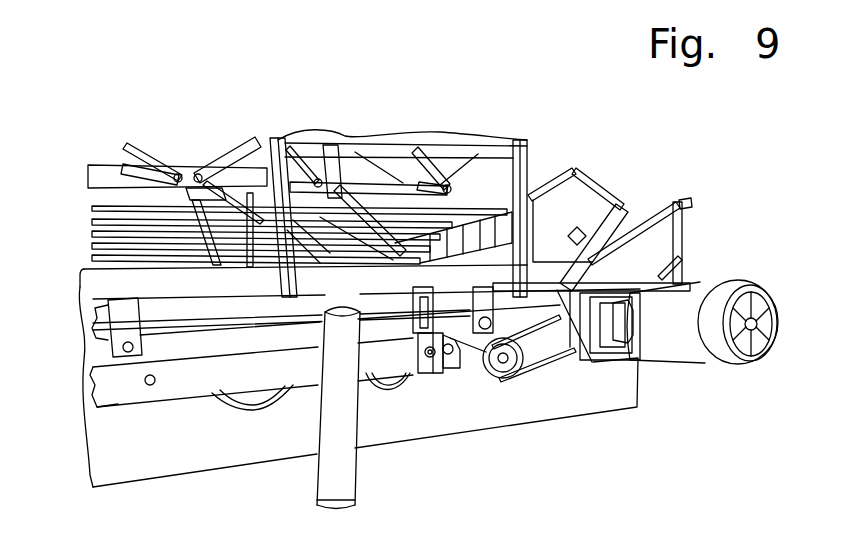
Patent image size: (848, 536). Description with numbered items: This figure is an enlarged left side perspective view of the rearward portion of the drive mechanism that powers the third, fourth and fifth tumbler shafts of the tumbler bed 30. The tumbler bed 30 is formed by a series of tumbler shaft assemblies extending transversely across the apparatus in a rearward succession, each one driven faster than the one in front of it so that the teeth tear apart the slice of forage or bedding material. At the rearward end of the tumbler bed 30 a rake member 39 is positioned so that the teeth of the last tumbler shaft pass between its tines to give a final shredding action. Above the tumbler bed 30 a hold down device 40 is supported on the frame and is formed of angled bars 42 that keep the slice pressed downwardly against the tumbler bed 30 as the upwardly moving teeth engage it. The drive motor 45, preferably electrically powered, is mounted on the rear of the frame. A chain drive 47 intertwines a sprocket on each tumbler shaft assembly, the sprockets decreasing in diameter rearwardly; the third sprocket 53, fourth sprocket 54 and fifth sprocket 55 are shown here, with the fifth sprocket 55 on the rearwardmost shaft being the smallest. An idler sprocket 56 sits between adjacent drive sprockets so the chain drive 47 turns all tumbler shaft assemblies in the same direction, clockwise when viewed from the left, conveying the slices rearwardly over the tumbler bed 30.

The tumbler bed 30 is at (218, 314).
The rake member 39 is at (478, 242).
The hold down device 40 is at (316, 112).
The angled bars 42 is at (150, 257).
The drive motor 45 is at (690, 297).
The chain drive 47 is at (194, 333).
The third sprocket 53 is at (255, 398).
The fourth sprocket 54 is at (392, 383).
The fifth sprocket 55 is at (510, 380).
The idler sprocket 56 is at (458, 362).